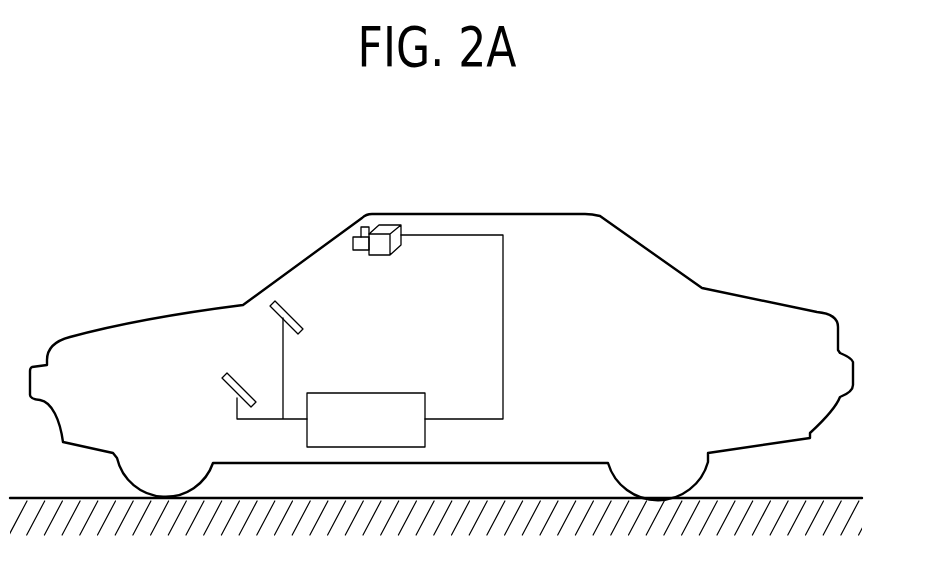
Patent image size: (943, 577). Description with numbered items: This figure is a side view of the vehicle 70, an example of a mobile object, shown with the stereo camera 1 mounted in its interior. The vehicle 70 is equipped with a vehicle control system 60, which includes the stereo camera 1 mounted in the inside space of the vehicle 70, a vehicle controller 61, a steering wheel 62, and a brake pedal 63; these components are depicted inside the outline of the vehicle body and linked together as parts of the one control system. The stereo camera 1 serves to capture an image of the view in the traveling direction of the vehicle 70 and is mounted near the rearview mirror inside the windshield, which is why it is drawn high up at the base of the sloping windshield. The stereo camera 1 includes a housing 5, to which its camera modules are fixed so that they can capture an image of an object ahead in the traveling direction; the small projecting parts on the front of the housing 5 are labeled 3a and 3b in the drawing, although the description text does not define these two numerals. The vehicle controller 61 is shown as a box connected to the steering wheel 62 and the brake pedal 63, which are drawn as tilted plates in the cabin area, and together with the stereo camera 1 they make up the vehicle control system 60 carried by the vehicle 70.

The stereo camera 1 is at (368, 244).
The lens 3a is at (353, 245).
The lens 3b is at (362, 228).
The housing 5 is at (383, 258).
The vehicle control system 60 is at (522, 302).
The vehicle controller 61 is at (363, 392).
The steering wheel 62 is at (286, 314).
The brake pedal 63 is at (243, 383).
The vehicle 70 is at (547, 213).